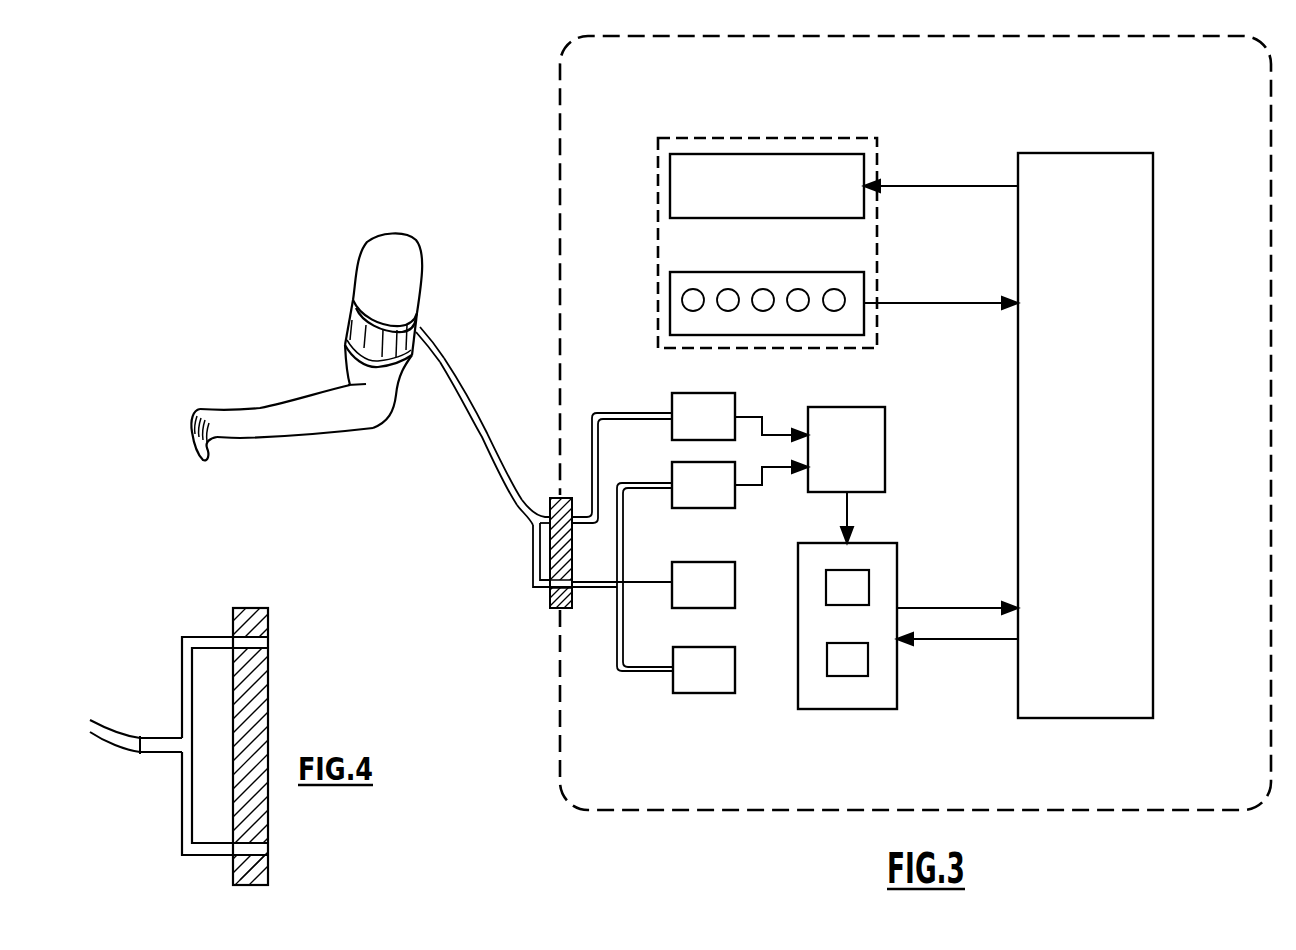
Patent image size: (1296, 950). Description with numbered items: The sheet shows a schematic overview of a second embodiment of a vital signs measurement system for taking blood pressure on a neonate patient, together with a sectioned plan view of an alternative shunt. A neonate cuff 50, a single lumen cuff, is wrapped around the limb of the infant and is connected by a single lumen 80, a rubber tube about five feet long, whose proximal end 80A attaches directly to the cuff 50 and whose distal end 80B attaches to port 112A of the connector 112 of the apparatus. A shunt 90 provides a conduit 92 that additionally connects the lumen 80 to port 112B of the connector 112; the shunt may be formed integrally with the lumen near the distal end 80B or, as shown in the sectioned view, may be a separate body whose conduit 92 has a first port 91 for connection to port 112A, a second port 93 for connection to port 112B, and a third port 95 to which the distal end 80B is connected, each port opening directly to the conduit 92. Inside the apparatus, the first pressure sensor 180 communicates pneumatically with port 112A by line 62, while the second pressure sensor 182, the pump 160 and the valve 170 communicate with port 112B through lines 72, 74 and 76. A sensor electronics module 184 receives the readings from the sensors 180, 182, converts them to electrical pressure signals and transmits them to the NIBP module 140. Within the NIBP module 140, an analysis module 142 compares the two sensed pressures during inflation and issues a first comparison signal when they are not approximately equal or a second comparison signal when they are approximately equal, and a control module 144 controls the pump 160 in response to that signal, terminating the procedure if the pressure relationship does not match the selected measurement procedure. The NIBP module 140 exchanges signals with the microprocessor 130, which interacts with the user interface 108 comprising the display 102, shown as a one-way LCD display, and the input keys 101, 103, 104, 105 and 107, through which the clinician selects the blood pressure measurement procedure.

In FIG. 3, the neonate cuff 50 is at (353, 332).
In FIG. 3, the single lumen 80 is at (473, 397).
In FIG. 3, the proximal end 80A is at (420, 327).
In FIG. 3, the distal end 80B is at (530, 522).
In FIG. 4, the distal end 80B is at (132, 737).
In FIG. 3, the shunt 90 is at (535, 587).
In FIG. 4, the shunt 90 is at (183, 636).
In FIG. 4, the first port 91 is at (232, 642).
In FIG. 3, the conduit 92 is at (535, 557).
In FIG. 4, the conduit 92 is at (187, 795).
In FIG. 4, the second port 93 is at (232, 848).
In FIG. 4, the third port 95 is at (135, 752).
In FIG. 3, the connector 112 is at (573, 608).
In FIG. 4, the connector 112 is at (267, 727).
In FIG. 3, the port 112A is at (572, 528).
In FIG. 4, the port 112A is at (260, 665).
In FIG. 3, the port 112B is at (553, 610).
In FIG. 4, the port 112B is at (267, 835).
In FIG. 3, the pressure line 62 is at (630, 412).
In FIG. 3, the pressure line 72 is at (646, 483).
In FIG. 3, the pressure line 74 is at (640, 583).
In FIG. 3, the pressure line 76 is at (640, 672).
In FIG. 3, the first pressure sensor 180 is at (688, 393).
In FIG. 3, the second pressure sensor 182 is at (673, 460).
In FIG. 3, the sensor electronics module 184 is at (886, 428).
In FIG. 3, the pump 160 is at (718, 562).
In FIG. 3, the valve 170 is at (718, 647).
In FIG. 3, the NIBP module 140 is at (872, 543).
In FIG. 3, the analysis module 142 is at (870, 587).
In FIG. 3, the control module 144 is at (868, 660).
In FIG. 3, the microprocessor 130 is at (1106, 152).
In FIG. 3, the user interface 108 is at (848, 350).
In FIG. 3, the display 102 is at (736, 224).
In FIG. 3, the input key 101 is at (682, 302).
In FIG. 3, the input key 103 is at (716, 290).
In FIG. 3, the input key 104 is at (768, 288).
In FIG. 3, the input key 105 is at (797, 288).
In FIG. 3, the input key 107 is at (841, 290).